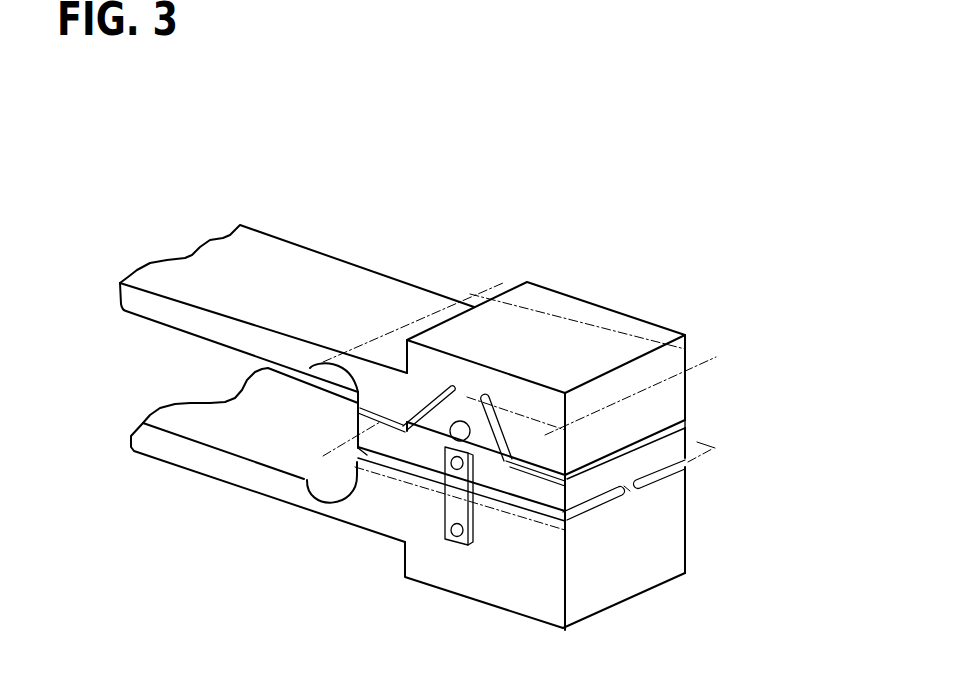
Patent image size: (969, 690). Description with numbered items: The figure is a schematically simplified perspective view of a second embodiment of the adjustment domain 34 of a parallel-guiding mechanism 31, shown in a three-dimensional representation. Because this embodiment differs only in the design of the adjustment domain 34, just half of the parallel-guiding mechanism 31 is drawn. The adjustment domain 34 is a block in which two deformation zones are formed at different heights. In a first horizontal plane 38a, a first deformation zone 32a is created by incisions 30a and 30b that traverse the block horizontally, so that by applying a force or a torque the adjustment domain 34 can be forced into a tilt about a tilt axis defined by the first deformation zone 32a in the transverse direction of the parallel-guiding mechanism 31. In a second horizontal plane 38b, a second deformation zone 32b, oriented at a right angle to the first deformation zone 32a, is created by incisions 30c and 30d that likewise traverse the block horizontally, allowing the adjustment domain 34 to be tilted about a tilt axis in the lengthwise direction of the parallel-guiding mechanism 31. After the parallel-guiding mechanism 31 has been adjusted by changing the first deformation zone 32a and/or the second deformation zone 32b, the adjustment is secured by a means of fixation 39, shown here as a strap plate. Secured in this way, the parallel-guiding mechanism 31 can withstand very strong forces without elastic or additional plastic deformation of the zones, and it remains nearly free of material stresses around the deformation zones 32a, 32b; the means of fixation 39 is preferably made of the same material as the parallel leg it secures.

The parallel-guiding mechanism 31 is at (150, 220).
The adjustment domain 34 is at (662, 274).
The incision 30a is at (500, 425).
The incision 30b is at (385, 418).
The incision 30c is at (586, 512).
The incision 30d is at (683, 475).
The first deformation zone 32a is at (465, 405).
The second deformation zone 32b is at (627, 488).
The first horizontal plane 38a is at (688, 372).
The second horizontal plane 38b is at (697, 442).
The means of fixation 39 is at (455, 508).